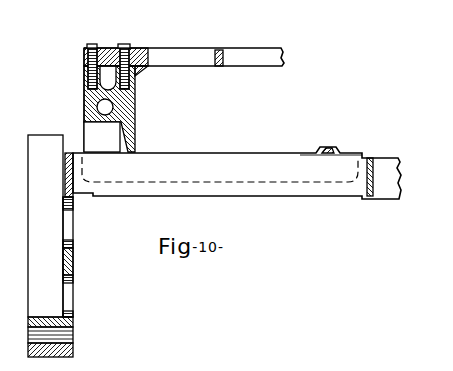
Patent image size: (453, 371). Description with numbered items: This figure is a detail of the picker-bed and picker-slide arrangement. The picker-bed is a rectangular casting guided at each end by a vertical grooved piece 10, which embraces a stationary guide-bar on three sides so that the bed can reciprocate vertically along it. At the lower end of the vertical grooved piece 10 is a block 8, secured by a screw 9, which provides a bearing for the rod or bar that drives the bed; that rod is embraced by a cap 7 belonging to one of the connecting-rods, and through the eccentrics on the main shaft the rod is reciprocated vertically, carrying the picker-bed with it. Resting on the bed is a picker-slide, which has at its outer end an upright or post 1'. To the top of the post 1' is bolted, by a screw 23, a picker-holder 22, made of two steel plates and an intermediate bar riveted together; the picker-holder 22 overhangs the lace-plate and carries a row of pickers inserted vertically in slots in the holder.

The upright or post 1' is at (116, 100).
The cap 7 is at (237, 173).
The block 8 is at (73, 321).
The screw 9 is at (73, 350).
The vertical grooved piece 10 is at (73, 247).
The picker-holder 22 is at (224, 52).
The screw 23 is at (95, 45).